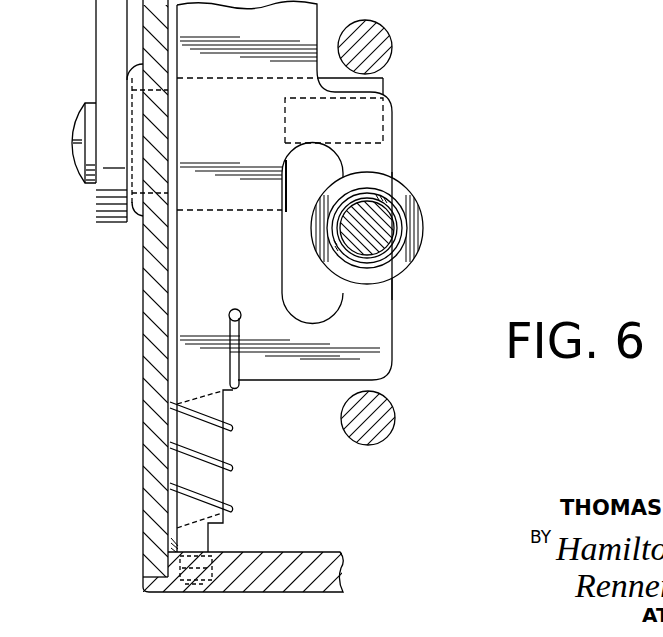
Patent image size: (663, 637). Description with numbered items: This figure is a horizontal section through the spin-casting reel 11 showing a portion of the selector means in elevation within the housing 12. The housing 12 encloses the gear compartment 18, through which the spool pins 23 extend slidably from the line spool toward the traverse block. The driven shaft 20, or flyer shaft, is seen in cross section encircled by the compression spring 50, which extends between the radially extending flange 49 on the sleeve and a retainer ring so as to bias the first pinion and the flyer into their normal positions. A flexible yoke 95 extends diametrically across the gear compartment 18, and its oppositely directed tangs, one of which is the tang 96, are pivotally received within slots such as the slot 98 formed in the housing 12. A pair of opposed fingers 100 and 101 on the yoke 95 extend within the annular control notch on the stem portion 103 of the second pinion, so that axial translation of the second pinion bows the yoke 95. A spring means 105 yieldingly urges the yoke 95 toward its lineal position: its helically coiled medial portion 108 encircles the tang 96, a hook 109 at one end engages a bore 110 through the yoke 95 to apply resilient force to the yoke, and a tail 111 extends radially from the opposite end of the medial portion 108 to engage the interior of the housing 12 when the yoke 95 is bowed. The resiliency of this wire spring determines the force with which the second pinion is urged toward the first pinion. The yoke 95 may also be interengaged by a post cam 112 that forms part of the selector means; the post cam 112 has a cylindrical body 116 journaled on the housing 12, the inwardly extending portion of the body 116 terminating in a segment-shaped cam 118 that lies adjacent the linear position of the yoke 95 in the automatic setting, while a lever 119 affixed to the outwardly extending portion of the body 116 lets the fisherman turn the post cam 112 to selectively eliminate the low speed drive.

The spin-casting reel 11 is at (124, 394).
The housing 12 is at (345, 557).
The gear compartment 18 is at (325, 497).
The driven shaft 20 is at (351, 254).
The spool pins 23 is at (390, 47).
The flange 49 is at (405, 240).
The compression spring 50 is at (340, 212).
The flexible yoke 95 is at (186, 277).
The tang 96 is at (212, 562).
The slot 98 is at (178, 580).
The finger 100 is at (378, 298).
The finger 101 is at (378, 174).
The stem portion 103 is at (412, 209).
The spring means 105 is at (240, 466).
The helically coiled medial portion 108 is at (240, 427).
The hook 109 is at (240, 331).
The bore 110 is at (229, 312).
The tail 111 is at (170, 543).
The post cam 112 is at (400, 85).
The cylindrical body 116 is at (226, 212).
The cam 118 is at (398, 132).
The lever 119 is at (108, 58).